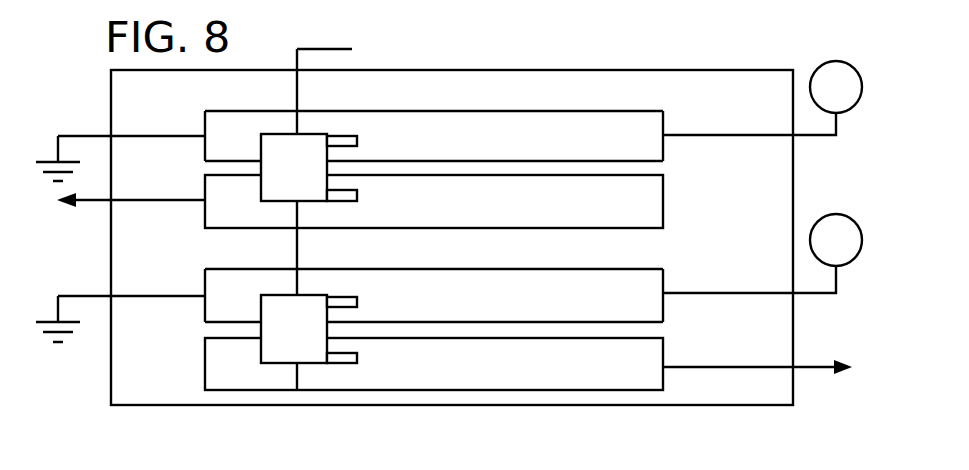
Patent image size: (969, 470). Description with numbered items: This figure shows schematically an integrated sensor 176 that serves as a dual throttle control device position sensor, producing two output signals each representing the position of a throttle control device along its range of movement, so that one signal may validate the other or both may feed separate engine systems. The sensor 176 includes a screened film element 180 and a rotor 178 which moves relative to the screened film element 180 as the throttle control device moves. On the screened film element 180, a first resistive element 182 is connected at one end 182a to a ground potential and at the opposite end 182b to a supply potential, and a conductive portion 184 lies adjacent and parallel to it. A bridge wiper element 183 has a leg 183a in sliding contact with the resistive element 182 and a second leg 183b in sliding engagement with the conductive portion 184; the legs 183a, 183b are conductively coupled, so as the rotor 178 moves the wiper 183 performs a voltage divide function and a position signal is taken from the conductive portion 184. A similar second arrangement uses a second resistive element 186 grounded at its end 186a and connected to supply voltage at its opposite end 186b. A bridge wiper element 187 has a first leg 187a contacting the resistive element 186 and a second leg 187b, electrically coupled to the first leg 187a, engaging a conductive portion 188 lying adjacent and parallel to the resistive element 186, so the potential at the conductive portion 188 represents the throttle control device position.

The integrated sensor 176 is at (492, 419).
The rotor 178 is at (323, 49).
The screened film element 180 is at (635, 70).
The first resistive element 182 is at (457, 117).
The end of first resistive element 182a is at (205, 111).
The opposite end of first resistive element 182b is at (663, 117).
The bridge wiper element 183 is at (308, 171).
The leg of bridge wiper element 183a is at (357, 141).
The second leg of bridge wiper element 183b is at (357, 196).
The conductive portion 184 is at (663, 207).
The second resistive element 186 is at (451, 278).
The end of second resistive element 186a is at (205, 278).
The opposite end of second resistive element 186b is at (663, 275).
The bridge wiper element 187 is at (306, 333).
The first leg of bridge wiper element 187a is at (357, 302).
The second leg of bridge wiper element 187b is at (357, 358).
The conductive portion 188 is at (663, 349).